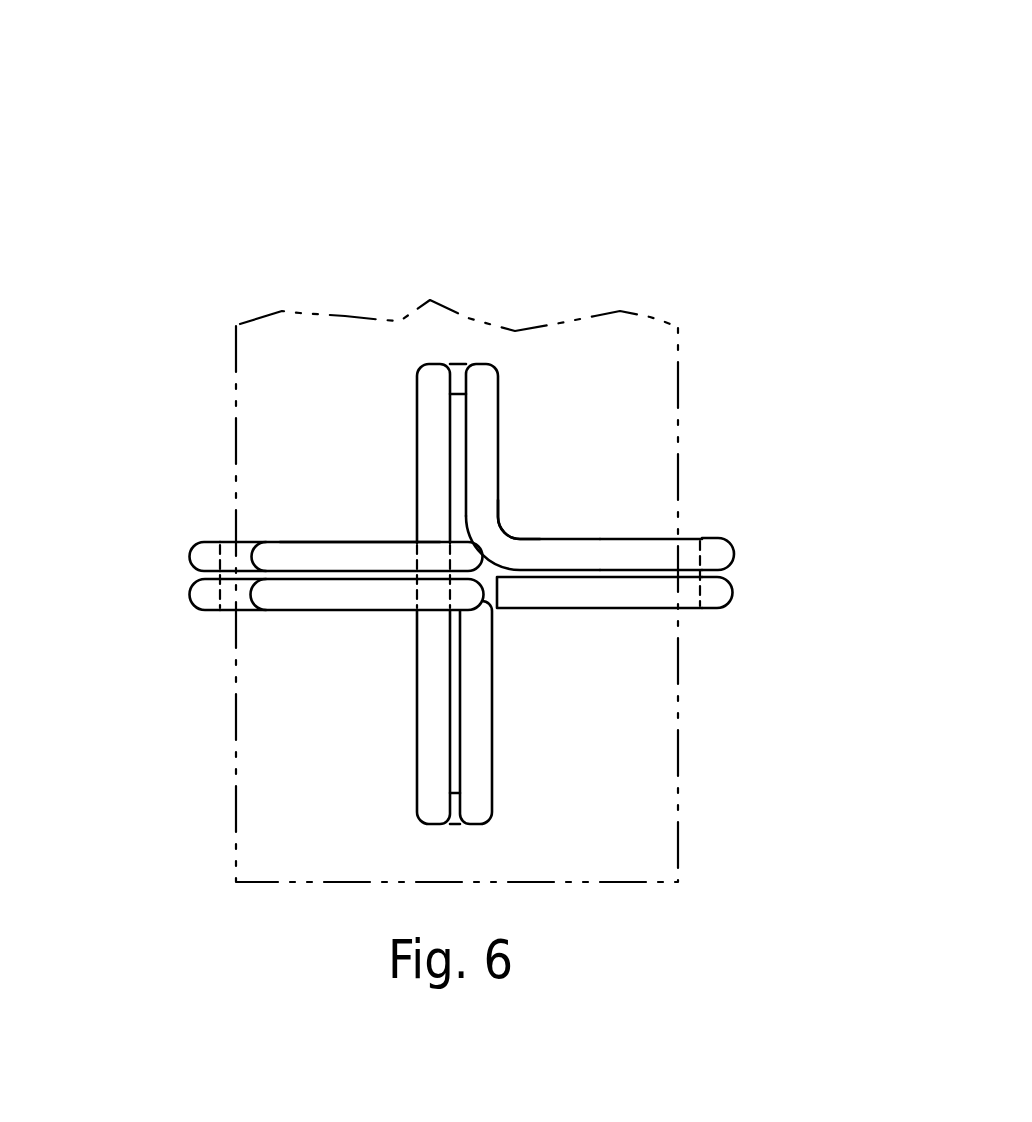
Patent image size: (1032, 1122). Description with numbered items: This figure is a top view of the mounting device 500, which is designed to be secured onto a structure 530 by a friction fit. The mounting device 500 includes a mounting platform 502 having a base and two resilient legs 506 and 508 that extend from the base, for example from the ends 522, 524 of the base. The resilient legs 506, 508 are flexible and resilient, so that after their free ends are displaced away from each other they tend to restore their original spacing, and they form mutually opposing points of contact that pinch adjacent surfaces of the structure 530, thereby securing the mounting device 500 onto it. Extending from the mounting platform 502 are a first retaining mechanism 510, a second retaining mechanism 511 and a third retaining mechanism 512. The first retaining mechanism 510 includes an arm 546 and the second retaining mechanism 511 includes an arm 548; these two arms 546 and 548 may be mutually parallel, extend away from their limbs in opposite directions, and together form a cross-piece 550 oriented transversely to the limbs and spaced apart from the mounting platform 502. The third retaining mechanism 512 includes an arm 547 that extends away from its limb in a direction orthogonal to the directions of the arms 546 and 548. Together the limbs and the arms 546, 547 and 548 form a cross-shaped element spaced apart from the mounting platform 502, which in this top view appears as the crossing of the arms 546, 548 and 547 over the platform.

The mounting device 500 is at (561, 150).
The mounting platform 502 is at (560, 484).
The resilient leg 506 is at (161, 569).
The resilient leg 508 is at (768, 555).
The first retaining mechanism 510 is at (396, 733).
The second retaining mechanism 511 is at (517, 407).
The third retaining mechanism 512 is at (311, 630).
The end of base 522 is at (230, 542).
The end of base 524 is at (692, 545).
The structure 530 is at (611, 789).
The arm 546 is at (510, 688).
The arm 547 is at (305, 525).
The arm 548 is at (398, 427).
The cross-piece 550 is at (403, 508).